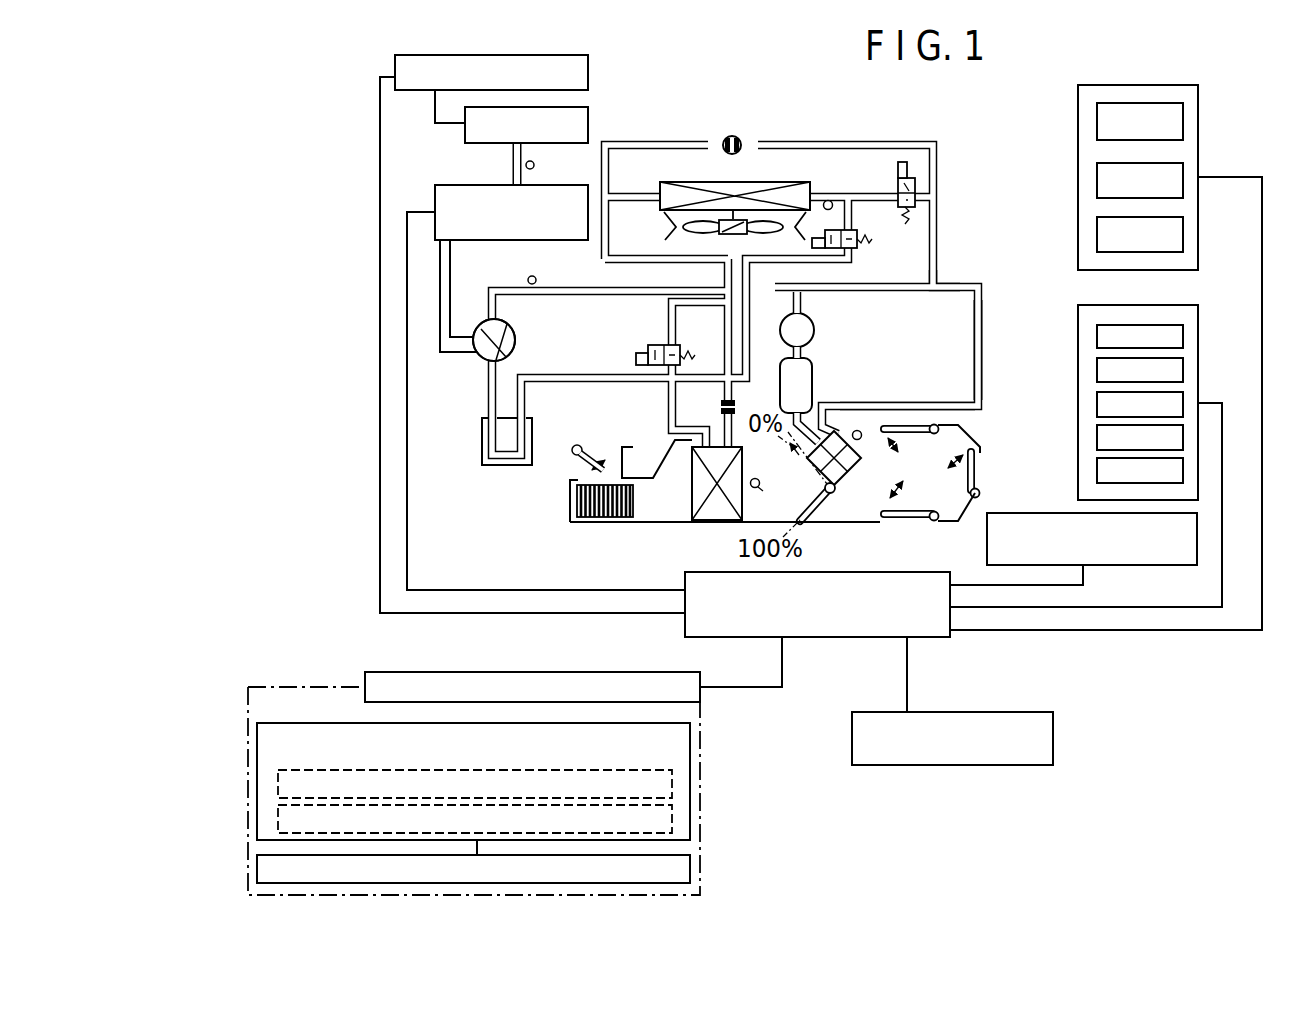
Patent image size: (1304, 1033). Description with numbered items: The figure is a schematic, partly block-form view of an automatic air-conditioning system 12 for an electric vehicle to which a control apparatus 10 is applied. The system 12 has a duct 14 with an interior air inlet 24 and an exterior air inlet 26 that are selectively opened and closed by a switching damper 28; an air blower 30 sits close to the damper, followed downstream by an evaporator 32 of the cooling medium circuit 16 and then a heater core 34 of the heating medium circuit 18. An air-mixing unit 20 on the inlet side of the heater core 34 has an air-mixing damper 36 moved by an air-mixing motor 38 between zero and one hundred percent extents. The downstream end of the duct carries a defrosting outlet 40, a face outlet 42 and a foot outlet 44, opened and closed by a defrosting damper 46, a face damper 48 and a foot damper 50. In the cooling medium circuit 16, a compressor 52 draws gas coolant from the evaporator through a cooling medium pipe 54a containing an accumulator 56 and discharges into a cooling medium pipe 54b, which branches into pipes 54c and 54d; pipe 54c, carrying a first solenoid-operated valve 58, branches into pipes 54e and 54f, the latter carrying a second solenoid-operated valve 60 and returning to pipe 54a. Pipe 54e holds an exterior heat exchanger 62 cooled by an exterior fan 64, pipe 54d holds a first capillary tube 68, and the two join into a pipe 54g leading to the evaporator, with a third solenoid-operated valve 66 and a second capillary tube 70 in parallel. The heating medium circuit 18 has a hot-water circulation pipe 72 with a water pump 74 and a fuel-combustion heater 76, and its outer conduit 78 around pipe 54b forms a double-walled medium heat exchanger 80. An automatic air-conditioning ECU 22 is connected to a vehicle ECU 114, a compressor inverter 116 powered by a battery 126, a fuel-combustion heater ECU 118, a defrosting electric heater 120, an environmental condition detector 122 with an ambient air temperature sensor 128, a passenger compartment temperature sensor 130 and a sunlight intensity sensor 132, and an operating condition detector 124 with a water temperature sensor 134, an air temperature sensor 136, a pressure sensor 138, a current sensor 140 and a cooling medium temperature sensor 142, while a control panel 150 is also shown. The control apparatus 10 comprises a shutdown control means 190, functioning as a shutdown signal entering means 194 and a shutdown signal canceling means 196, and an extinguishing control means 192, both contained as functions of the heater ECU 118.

The control apparatus 10 is at (246, 678).
The automatic air-conditioning system 12 is at (1020, 68).
The duct 14 is at (680, 523).
The cooling medium circuit 16 is at (478, 368).
The heating medium circuit 18 is at (1021, 347).
The air-mixing unit 20 is at (829, 507).
The automatic air-conditioning ECU 22 is at (853, 638).
The interior air inlet 24 is at (605, 453).
The exterior air inlet 26 is at (573, 464).
The switching damper 28 is at (578, 445).
The air blower 30 is at (600, 518).
The evaporator 32 is at (713, 522).
The heater core 34 is at (863, 461).
The air-mixing damper 36 is at (807, 500).
The air-mixing motor 38 is at (837, 487).
The defrosting outlet 40 is at (922, 395).
The face outlet 42 is at (1021, 500).
The foot outlet 44 is at (908, 522).
The defrosting damper 46 is at (927, 437).
The face damper 48 is at (978, 484).
The foot damper 50 is at (924, 510).
The compressor 52 is at (514, 335).
The cooling medium pipe 54a is at (575, 382).
The cooling medium pipe 54b is at (621, 296).
The cooling medium pipe 54c is at (861, 193).
The cooling medium pipe 54d is at (820, 141).
The cooling medium pipe 54e is at (636, 193).
The cooling medium pipe 54f is at (828, 256).
The cooling medium pipe 54g is at (638, 257).
The accumulator 56 is at (482, 457).
The first solenoid-operated valve 58 is at (918, 178).
The second solenoid-operated valve 60 is at (860, 240).
The exterior heat exchanger 62 is at (750, 182).
The exterior fan 64 is at (723, 182).
The third solenoid-operated valve 66 is at (680, 353).
The first capillary tube 68 is at (733, 137).
The second capillary tube 70 is at (735, 404).
The hot-water circulation pipe 72 is at (980, 392).
The water pump 74 is at (814, 330).
The fuel-combustion heater 76 is at (815, 380).
The outer conduit 78 is at (886, 297).
The medium heat exchanger 80 is at (941, 283).
The vehicle ECU 114 is at (590, 76).
The compressor inverter 116 is at (462, 185).
The fuel-combustion heater ECU 118 is at (363, 680).
The defrosting electric heater 120 is at (1128, 565).
The environmental condition detector 122 is at (1159, 85).
The operating condition detector 124 is at (1166, 306).
The battery 126 is at (590, 127).
The ambient air temperature sensor 128 is at (1183, 112).
The passenger compartment temperature sensor 130 is at (1183, 170).
The sunlight intensity sensor 132 is at (1183, 224).
The water temperature sensor 134 is at (1183, 337).
The air temperature sensor 136 is at (1203, 370).
The pressure sensor 138 is at (535, 277).
The current sensor 140 is at (534, 165).
The cooling medium temperature sensor 142 is at (1097, 470).
The control panel 150 is at (1005, 710).
The shutdown control means 190 is at (257, 733).
The extinguishing control means 192 is at (257, 868).
The shutdown signal entering means 194 is at (672, 783).
The shutdown signal canceling means 196 is at (672, 816).